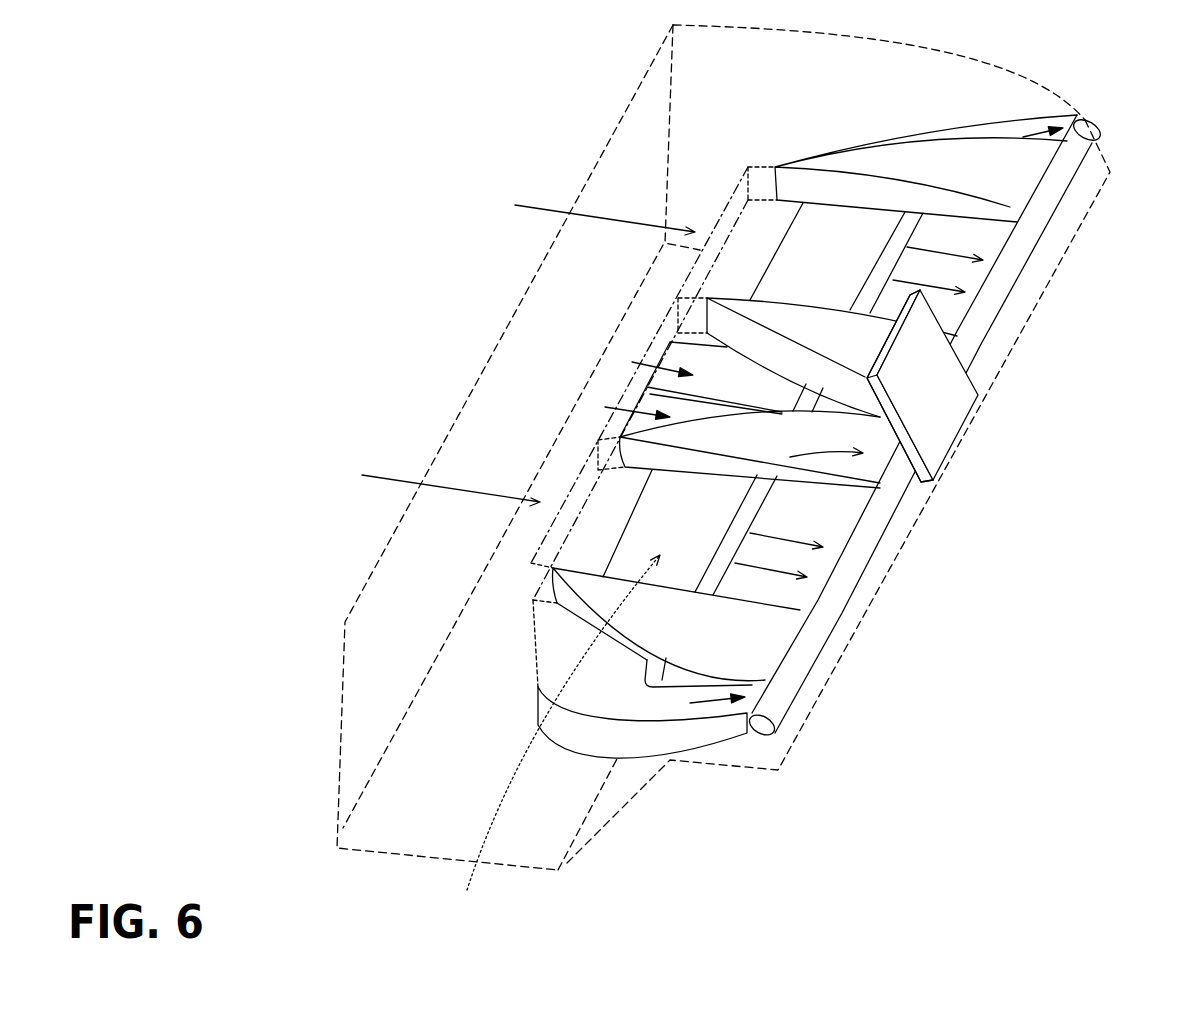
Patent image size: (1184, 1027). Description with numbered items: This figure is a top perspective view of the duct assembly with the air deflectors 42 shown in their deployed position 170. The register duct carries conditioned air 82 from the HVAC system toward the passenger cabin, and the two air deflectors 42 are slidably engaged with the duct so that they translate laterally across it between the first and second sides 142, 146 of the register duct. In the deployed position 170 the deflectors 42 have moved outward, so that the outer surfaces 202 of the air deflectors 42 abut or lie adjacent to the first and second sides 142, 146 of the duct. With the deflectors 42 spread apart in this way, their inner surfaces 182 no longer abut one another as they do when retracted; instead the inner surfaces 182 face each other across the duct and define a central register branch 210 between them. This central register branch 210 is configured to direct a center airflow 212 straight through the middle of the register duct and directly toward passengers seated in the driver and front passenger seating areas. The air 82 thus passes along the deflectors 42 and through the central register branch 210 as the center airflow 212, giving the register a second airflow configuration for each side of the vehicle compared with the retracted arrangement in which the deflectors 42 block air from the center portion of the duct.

The air deflector 42 is at (862, 465).
The conditioned air 82 is at (709, 703).
The first side of the register duct 142 is at (536, 590).
The second side of the register duct 146 is at (587, 458).
The deployed position 170 is at (1071, 241).
The inner surface of the air deflector 182 is at (815, 477).
The outer surface of the air deflector 202 is at (773, 682).
The central register branch 210 is at (549, 740).
The center airflow 212 is at (972, 293).